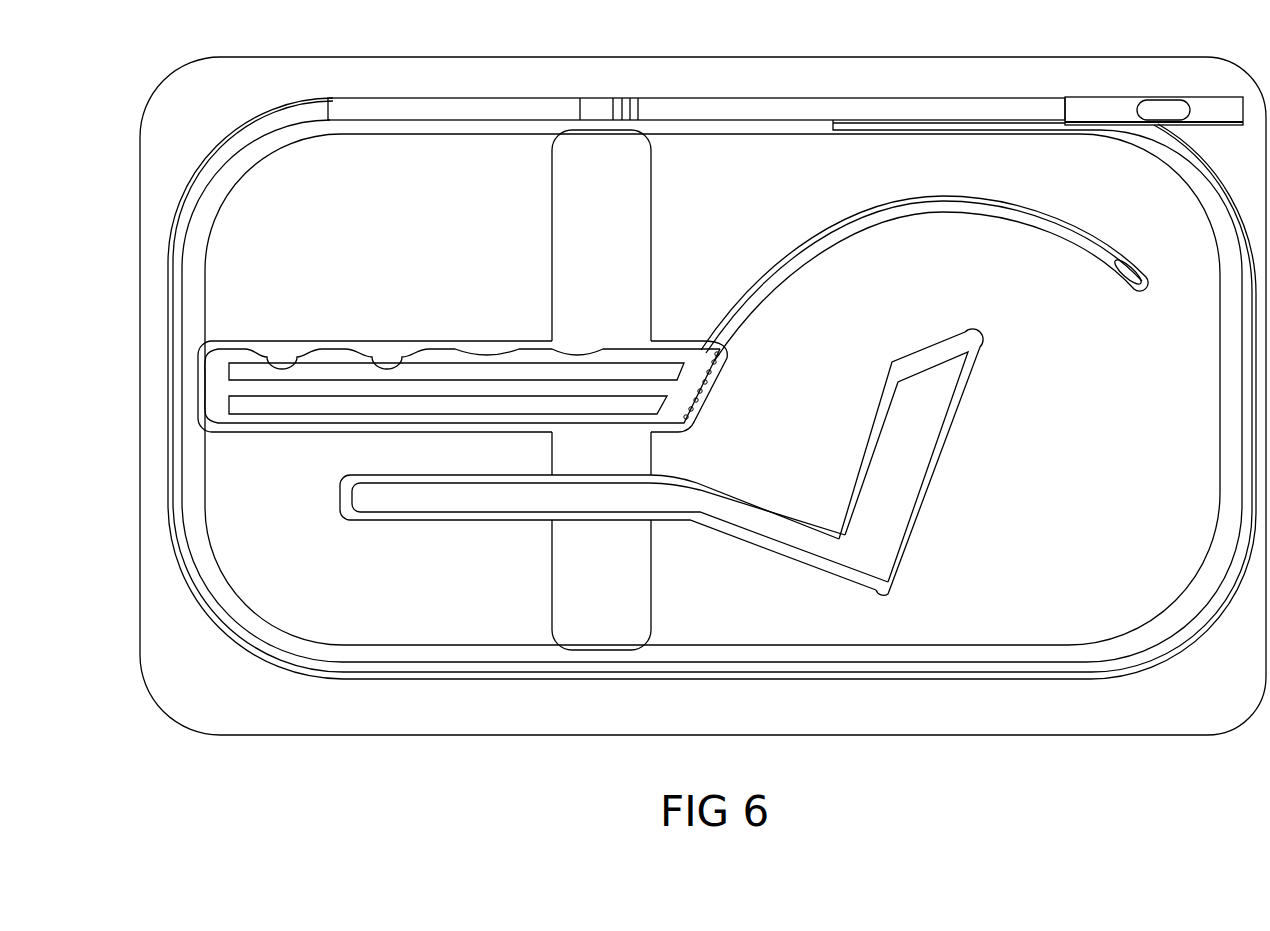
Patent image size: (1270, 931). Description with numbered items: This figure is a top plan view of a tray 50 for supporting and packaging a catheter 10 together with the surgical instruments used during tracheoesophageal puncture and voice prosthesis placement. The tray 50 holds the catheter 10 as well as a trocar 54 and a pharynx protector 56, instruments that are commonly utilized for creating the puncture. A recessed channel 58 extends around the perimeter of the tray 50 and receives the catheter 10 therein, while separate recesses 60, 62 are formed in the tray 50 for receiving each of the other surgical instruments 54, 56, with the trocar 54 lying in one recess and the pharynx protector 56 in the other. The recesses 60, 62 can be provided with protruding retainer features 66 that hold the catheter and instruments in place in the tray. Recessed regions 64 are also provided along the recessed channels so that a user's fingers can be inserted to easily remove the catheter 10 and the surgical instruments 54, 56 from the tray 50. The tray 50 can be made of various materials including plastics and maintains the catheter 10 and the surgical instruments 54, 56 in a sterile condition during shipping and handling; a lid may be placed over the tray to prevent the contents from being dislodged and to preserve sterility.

The catheter 10 is at (541, 108).
The tray 50 is at (448, 762).
The trocar 54 is at (484, 353).
The pharynx protector 56 is at (934, 479).
The recessed channel 58 is at (255, 640).
The recess 60 is at (708, 397).
The recess 62 is at (667, 462).
The recessed regions 64 is at (650, 222).
The protruding retainer features 66 is at (296, 365).